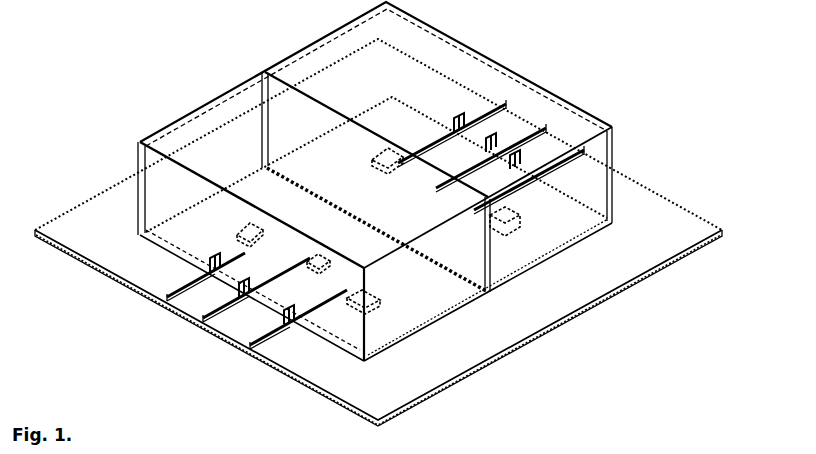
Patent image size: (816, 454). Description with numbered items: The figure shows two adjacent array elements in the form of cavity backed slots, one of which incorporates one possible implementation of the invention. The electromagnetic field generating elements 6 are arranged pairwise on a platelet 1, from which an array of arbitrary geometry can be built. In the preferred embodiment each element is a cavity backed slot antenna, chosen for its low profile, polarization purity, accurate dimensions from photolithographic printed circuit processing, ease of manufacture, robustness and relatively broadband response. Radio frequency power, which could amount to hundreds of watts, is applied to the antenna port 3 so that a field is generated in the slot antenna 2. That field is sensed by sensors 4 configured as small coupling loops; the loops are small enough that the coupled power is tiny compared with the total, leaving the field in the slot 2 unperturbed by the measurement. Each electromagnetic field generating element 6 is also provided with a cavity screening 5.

The platelet 1 is at (112, 213).
The slot antenna 2 is at (240, 231).
The antenna port 3 is at (543, 126).
The sensors 4 is at (258, 225).
The cavity screening 5 is at (613, 127).
The electromagnetic field generating elements 6 is at (549, 230).